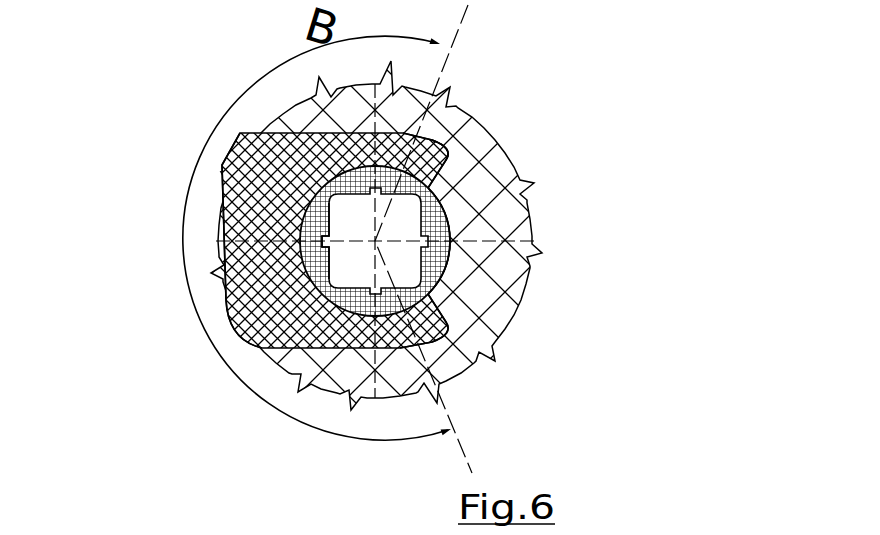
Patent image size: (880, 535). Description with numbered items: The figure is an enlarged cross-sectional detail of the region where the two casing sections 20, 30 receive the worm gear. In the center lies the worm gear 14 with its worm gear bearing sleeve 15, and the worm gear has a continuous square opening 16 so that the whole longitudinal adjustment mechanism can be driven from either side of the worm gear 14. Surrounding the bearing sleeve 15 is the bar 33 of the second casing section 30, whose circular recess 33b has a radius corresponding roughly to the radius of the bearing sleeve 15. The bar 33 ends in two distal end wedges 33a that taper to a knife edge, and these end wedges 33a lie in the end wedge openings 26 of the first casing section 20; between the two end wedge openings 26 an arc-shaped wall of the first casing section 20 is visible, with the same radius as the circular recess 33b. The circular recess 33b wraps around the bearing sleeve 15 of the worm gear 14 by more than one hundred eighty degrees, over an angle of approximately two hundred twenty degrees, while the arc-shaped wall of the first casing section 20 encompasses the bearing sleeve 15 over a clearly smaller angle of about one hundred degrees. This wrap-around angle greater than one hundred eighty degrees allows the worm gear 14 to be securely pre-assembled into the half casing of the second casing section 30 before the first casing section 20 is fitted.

The worm gear 14 is at (445, 210).
The worm gear bearing sleeve 15 is at (447, 263).
The square opening 16 is at (347, 220).
The first casing section 20 is at (710, 263).
The end wedge opening 26 is at (448, 151).
The second casing section 30 is at (78, 263).
The bar 33 is at (265, 202).
The end wedge 33a is at (430, 152).
The circular recess 33b is at (232, 318).